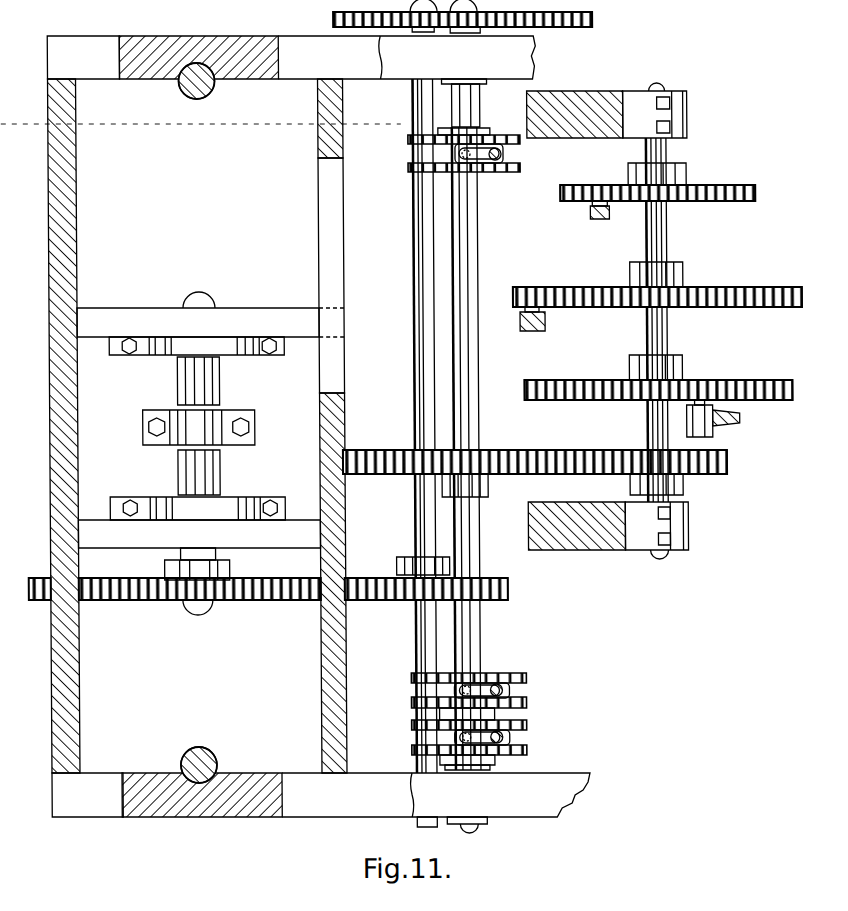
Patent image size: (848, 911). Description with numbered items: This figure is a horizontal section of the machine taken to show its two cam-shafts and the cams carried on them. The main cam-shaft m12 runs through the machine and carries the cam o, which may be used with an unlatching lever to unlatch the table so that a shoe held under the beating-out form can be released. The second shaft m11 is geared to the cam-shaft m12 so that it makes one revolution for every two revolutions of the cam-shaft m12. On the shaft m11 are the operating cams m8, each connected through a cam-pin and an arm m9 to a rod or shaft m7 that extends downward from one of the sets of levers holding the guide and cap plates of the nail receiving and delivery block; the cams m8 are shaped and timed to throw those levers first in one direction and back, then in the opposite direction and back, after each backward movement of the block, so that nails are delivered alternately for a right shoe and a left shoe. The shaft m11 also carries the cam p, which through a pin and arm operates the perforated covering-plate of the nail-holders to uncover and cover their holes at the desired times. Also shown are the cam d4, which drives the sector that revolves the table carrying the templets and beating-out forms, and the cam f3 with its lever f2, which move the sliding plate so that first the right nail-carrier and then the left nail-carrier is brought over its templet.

The rods or shafts m7 is at (490, 172).
The operating-cam m8 is at (502, 154).
The arm m9 is at (492, 747).
The shaft m11 is at (471, 367).
The cam-shaft m12 is at (665, 229).
The cam o is at (657, 191).
The cam d4 is at (657, 296).
The cam f3 is at (658, 377).
The lever f2 is at (720, 420).
The cam p is at (522, 685).